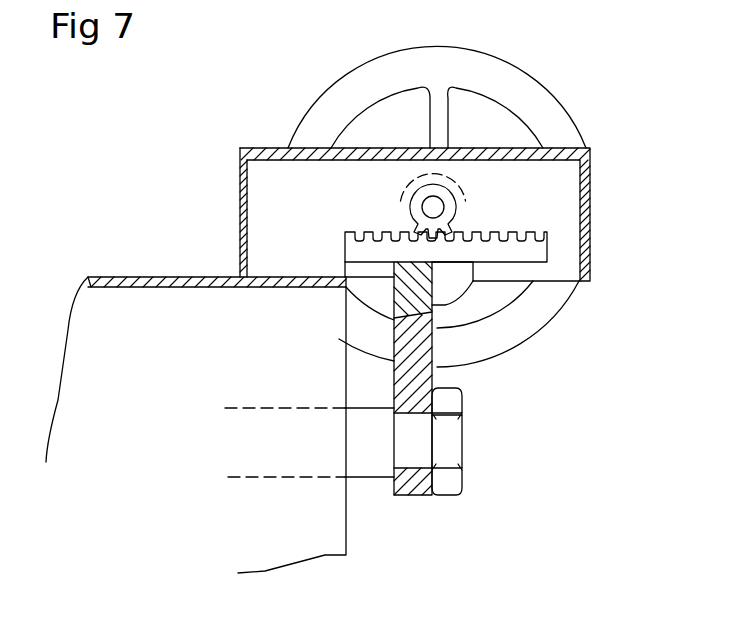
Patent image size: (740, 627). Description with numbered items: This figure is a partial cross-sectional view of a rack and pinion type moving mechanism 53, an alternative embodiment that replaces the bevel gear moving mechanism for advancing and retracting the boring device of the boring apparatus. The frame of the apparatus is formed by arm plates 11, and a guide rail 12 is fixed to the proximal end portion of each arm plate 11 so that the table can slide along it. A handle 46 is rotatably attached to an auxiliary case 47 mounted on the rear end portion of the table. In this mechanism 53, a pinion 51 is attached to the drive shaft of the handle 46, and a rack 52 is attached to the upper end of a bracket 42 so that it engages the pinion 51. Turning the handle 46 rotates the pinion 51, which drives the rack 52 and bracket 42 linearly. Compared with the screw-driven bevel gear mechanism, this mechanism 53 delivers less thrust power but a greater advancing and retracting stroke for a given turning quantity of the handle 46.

The arm plate 11 is at (176, 276).
The guide rail 12 is at (372, 465).
The bracket 42 is at (433, 377).
The handle 46 is at (395, 62).
The auxiliary case 47 is at (602, 204).
The pinion 51 is at (403, 223).
The rack 52 is at (347, 233).
The rack and pinion type moving mechanism 53 is at (520, 47).